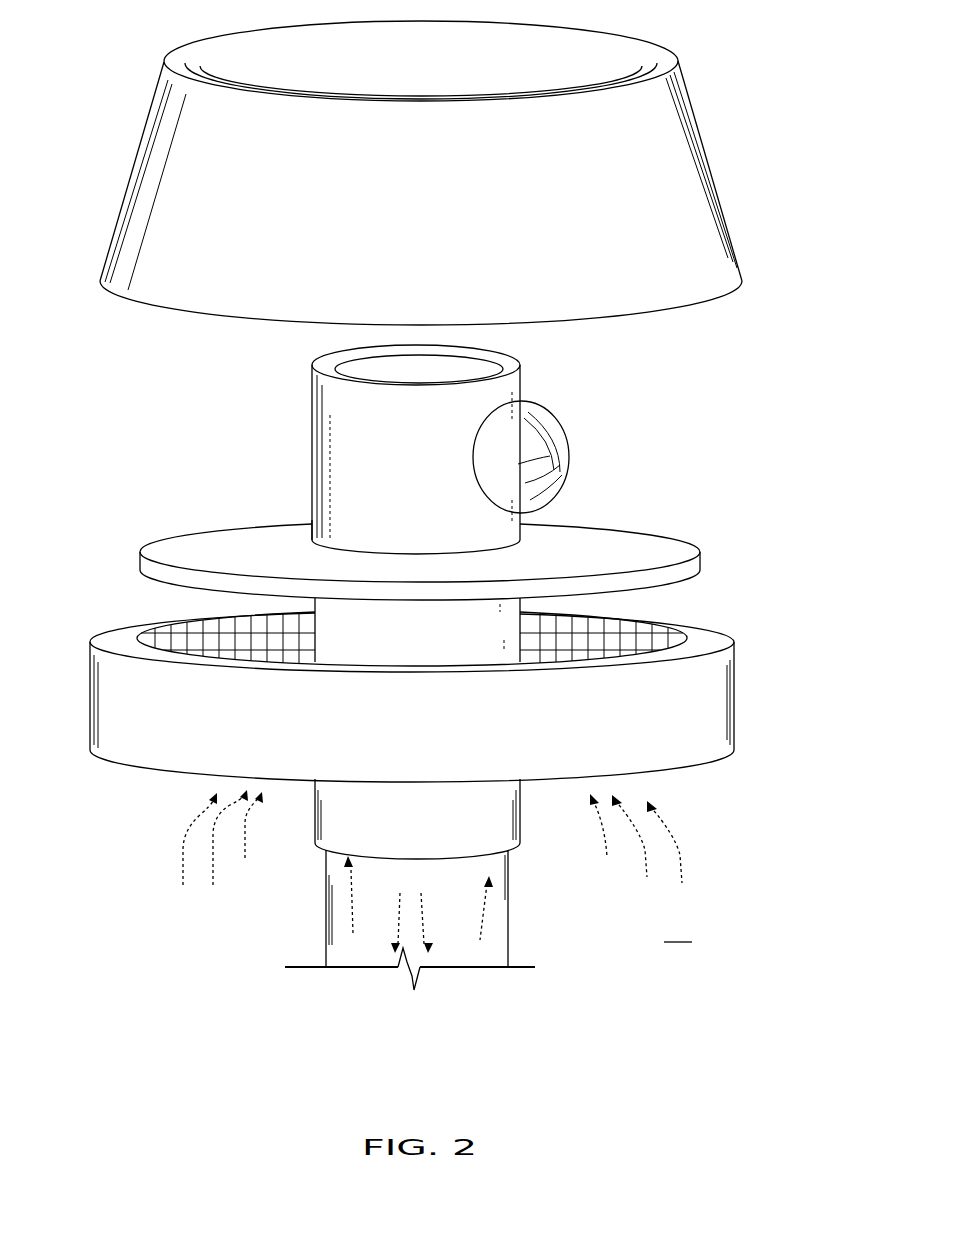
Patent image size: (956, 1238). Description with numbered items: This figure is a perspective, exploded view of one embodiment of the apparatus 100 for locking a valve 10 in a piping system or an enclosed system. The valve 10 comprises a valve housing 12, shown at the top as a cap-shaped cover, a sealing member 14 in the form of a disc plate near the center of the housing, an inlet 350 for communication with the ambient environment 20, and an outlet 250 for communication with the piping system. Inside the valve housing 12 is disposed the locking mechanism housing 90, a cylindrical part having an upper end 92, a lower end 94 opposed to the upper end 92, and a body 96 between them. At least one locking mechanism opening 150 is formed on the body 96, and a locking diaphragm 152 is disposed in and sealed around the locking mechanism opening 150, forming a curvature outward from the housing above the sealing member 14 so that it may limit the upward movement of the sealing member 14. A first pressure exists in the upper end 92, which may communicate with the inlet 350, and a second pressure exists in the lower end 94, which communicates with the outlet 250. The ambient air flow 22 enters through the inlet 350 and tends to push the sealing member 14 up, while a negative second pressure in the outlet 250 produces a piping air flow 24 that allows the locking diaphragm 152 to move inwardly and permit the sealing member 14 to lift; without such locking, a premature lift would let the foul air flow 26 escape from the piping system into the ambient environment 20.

The valve 10 is at (439, 181).
The valve housing 12 is at (642, 293).
The sealing member 14 is at (613, 534).
The ambient environment 20 is at (183, 850).
The ambient air flow 22 is at (683, 858).
The piping air flow 24 is at (397, 943).
The foul air flow 26 is at (348, 868).
The locking mechanism housing 90 is at (358, 445).
The upper end 92 is at (327, 360).
The lower end 94 is at (521, 841).
The body 96 is at (323, 518).
The apparatus 100 is at (666, 400).
The locking mechanism opening 150 is at (570, 445).
The locking diaphragm 152 is at (566, 456).
The outlet 250 is at (502, 909).
The inlet 350 is at (667, 760).